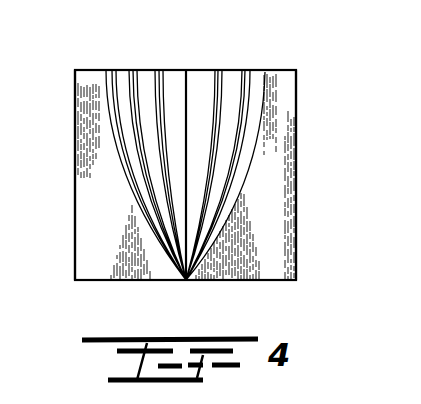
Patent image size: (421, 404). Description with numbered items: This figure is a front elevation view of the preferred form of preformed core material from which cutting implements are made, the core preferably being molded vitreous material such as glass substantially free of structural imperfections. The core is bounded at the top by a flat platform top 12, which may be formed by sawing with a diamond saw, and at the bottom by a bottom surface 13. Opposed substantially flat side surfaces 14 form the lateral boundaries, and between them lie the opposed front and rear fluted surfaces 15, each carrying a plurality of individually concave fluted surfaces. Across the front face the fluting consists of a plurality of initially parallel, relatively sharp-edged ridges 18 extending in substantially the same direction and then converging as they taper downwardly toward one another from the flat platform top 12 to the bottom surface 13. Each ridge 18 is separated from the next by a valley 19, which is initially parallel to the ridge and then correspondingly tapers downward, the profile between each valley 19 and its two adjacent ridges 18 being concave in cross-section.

The flat platform top 12 is at (232, 70).
The bottom surface 13 is at (131, 282).
The side surfaces 14 is at (80, 232).
The front and rear fluted surfaces 15 is at (160, 158).
The ridges 18 is at (160, 120).
The valley 19 is at (203, 130).